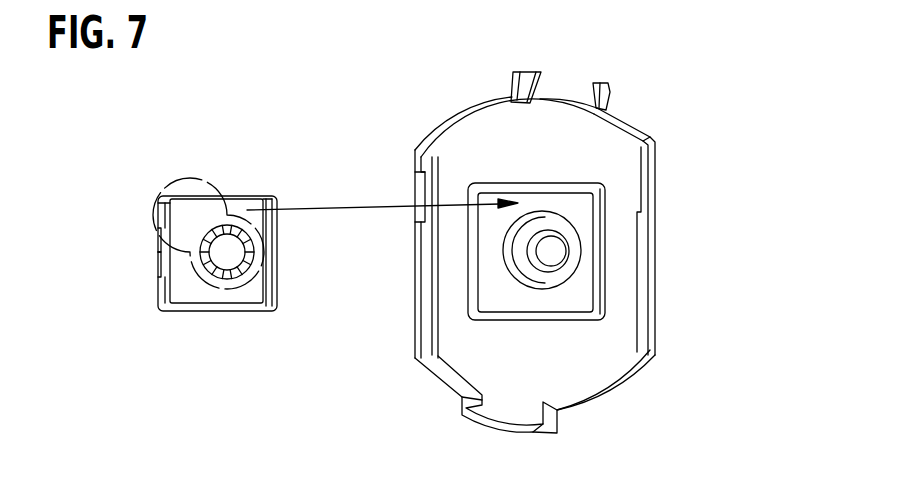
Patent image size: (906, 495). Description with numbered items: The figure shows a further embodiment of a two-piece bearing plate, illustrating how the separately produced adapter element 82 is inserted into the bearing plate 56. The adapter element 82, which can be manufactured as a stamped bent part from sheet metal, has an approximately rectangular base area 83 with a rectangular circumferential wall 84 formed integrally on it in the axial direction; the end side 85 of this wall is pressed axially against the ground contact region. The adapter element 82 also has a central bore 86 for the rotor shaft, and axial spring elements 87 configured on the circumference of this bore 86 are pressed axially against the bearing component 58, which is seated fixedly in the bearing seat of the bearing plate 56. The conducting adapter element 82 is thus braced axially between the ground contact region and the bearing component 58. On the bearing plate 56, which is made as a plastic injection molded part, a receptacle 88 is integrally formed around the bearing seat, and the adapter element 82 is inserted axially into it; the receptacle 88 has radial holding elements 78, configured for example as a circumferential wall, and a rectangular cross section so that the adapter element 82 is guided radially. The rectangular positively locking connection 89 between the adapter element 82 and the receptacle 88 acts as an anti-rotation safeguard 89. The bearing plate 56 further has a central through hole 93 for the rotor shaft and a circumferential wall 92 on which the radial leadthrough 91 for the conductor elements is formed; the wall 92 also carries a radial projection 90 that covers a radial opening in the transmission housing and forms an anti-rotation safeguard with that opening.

The bearing plate 56 is at (547, 240).
The bearing component 58 is at (555, 285).
The radial holding elements 78 is at (593, 205).
The adapter element 82 is at (185, 248).
The base area 83 is at (208, 218).
The circumferential wall 84 is at (160, 306).
The end side 85 is at (178, 196).
The central bore 86 is at (230, 258).
The axial spring elements 87 is at (250, 270).
The receptacle 88 is at (615, 251).
The positively locking connection 89 is at (348, 207).
The radial projection 90 is at (535, 430).
The radial leadthrough 91 is at (533, 83).
The circumferential wall 92 is at (600, 388).
The central through hole 93 is at (507, 258).